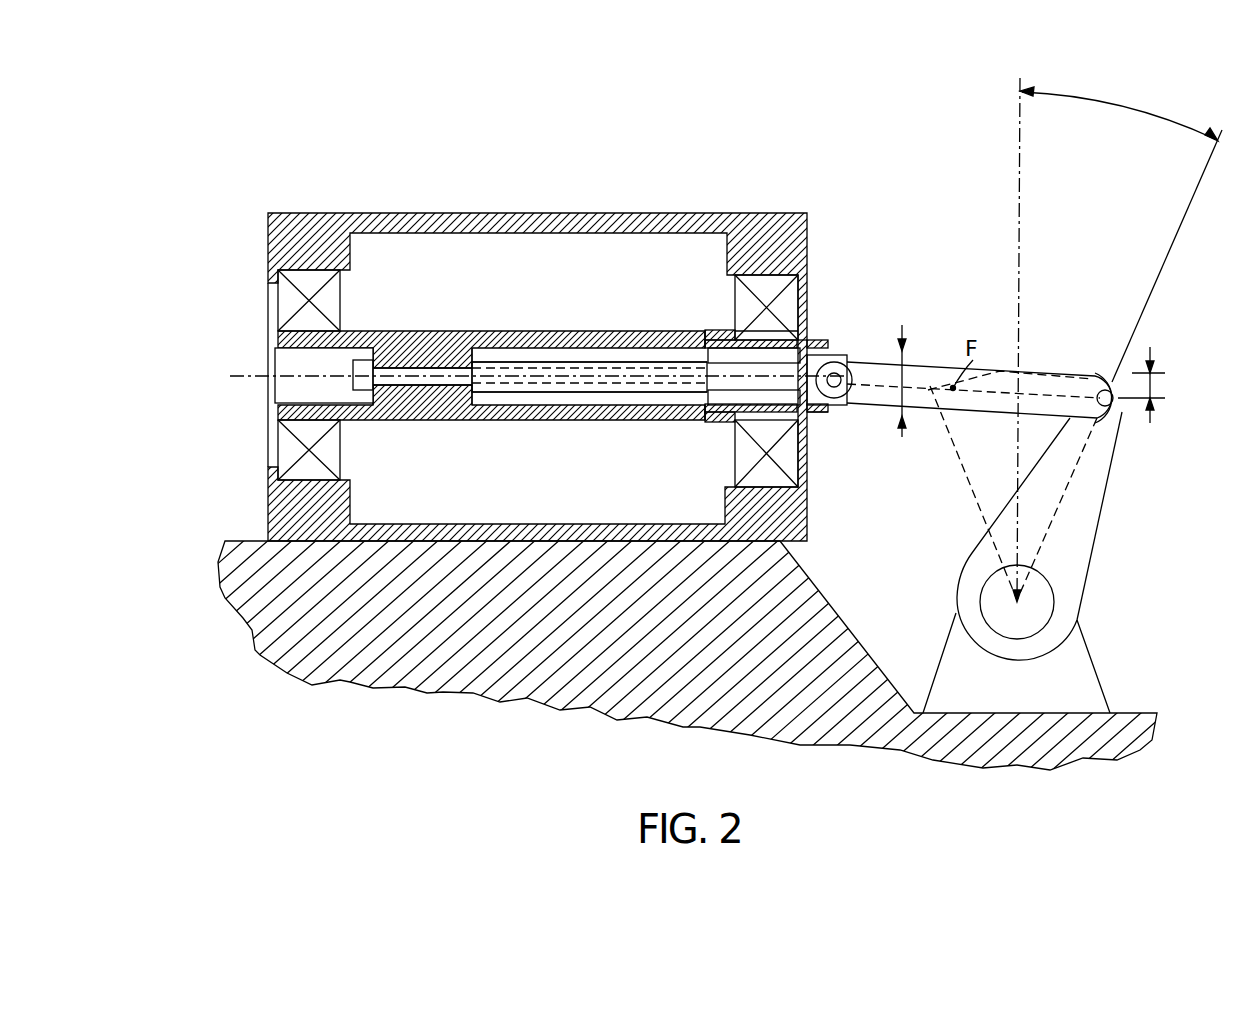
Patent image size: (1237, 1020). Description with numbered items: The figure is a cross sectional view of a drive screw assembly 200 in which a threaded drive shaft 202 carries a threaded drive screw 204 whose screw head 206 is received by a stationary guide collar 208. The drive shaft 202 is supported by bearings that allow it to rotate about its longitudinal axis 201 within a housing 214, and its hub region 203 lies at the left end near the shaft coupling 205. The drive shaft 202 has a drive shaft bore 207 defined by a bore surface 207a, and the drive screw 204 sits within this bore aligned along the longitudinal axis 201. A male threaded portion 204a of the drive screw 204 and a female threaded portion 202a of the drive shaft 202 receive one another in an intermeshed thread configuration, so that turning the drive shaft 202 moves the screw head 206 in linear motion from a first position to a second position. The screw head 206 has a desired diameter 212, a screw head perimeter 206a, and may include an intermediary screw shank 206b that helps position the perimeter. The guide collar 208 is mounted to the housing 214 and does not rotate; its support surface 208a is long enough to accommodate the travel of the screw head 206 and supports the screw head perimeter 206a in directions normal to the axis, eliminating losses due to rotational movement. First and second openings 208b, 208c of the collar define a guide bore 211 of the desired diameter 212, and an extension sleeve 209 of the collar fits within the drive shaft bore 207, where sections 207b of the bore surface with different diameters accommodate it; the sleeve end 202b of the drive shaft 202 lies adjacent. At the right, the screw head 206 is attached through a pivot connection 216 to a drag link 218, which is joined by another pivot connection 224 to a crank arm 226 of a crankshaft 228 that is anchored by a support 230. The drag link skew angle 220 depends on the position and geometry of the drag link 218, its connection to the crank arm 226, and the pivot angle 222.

The drive screw assembly 200 is at (318, 731).
The longitudinal axis 201 is at (248, 374).
The threaded drive shaft 202 is at (460, 322).
The female threaded portion 202a is at (406, 372).
The sleeve end 202b is at (785, 420).
The hub 203 is at (376, 345).
The threaded drive screw 204 is at (586, 360).
The male threaded portion 204a is at (497, 362).
The shaft coupling 205 is at (352, 376).
The screw head 206 is at (818, 340).
The screw head perimeter 206a is at (820, 420).
The intermediary screw shank 206b is at (660, 362).
The drive shaft bore 207 is at (578, 395).
The bore surface 207a is at (497, 398).
The sections with different diameters 207b is at (778, 390).
The stationary guide collar 208 is at (806, 532).
The support surface 208a is at (712, 410).
The first opening 208b is at (806, 348).
The second opening 208c is at (735, 345).
The extension sleeve 209 is at (745, 332).
The guide bore 211 is at (737, 420).
The desired diameter 212 is at (904, 352).
The housing 214 is at (380, 213).
The pivot connection 216 is at (838, 378).
The drag link 218 is at (1075, 380).
The drag link skew angle 220 is at (1155, 388).
The pivot angle 222 is at (1135, 115).
The pivot connection 224 is at (1118, 412).
The crank arm 226 is at (1080, 565).
The crankshaft 228 is at (1054, 607).
The support 230 is at (1110, 690).